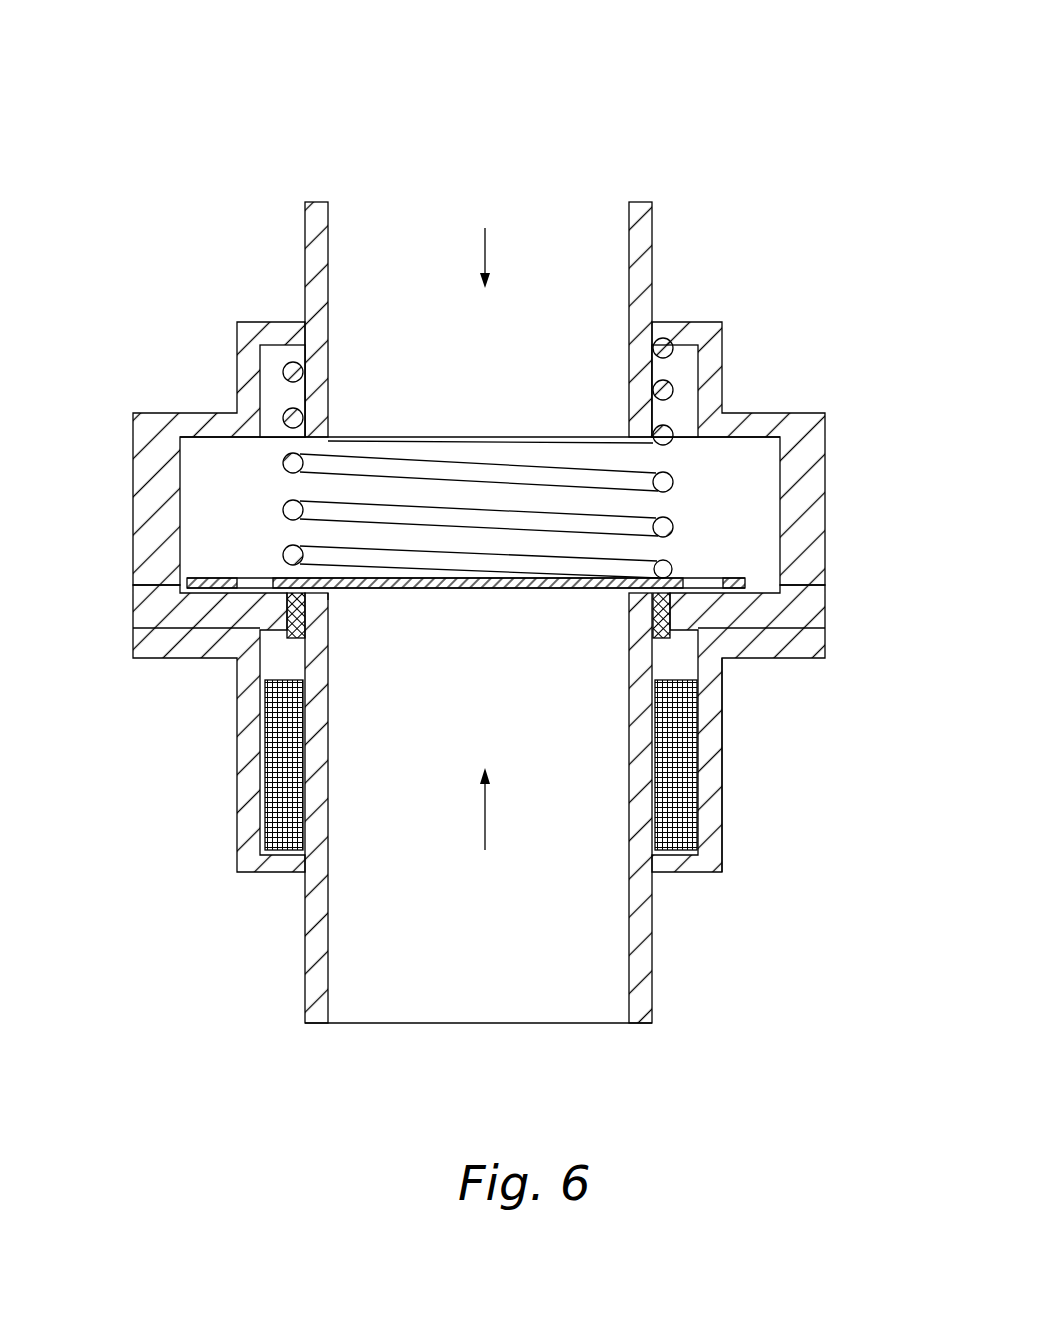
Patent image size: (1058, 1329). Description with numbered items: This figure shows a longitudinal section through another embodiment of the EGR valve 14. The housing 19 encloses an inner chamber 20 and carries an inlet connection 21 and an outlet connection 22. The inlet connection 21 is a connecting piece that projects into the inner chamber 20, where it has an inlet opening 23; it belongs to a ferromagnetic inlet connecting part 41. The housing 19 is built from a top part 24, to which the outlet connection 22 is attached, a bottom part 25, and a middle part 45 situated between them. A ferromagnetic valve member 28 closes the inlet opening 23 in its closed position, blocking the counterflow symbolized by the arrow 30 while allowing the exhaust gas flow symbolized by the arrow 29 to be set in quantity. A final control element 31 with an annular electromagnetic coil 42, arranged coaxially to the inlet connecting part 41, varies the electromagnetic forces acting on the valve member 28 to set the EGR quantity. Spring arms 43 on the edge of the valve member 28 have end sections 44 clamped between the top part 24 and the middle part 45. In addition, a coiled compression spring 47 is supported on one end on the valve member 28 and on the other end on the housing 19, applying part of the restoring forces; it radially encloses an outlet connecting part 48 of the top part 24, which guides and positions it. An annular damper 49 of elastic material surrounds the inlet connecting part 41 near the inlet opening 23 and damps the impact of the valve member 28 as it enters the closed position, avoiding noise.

The EGR valve 14 is at (186, 130).
The housing 19 is at (832, 488).
The inner chamber 20 is at (245, 510).
The inlet connection 21 is at (643, 955).
The outlet connection 22 is at (645, 228).
The inlet opening 23 is at (357, 597).
The top part 24 is at (155, 428).
The bottom part 25 is at (716, 757).
The valve member 28 is at (487, 583).
The arrow 29 is at (485, 808).
The arrow 30 is at (485, 253).
The final control element 31 is at (735, 703).
The inlet connecting part 41 is at (317, 742).
The electromagnetic coil 42 is at (675, 810).
The spring arm 43 is at (733, 578).
The end section 44 is at (207, 578).
The middle part 45 is at (158, 600).
The coiled compression spring 47 is at (672, 473).
The outlet connecting part 48 is at (320, 387).
The damper 49 is at (297, 640).